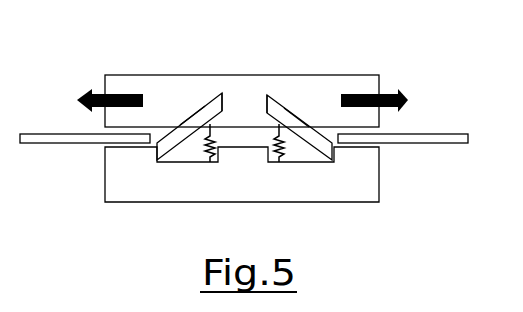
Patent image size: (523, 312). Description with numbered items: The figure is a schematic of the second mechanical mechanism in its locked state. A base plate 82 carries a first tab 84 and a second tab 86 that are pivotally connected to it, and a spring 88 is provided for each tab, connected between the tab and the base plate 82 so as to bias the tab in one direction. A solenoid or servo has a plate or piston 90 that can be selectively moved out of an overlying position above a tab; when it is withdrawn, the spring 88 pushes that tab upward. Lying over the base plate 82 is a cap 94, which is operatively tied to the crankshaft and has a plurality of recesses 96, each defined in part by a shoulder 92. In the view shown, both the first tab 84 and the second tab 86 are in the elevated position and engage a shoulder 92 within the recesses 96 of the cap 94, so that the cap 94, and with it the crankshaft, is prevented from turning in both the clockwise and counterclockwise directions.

The base plate 82 is at (370, 194).
The first tab 84 is at (160, 148).
The second tab 86 is at (326, 146).
The spring 88 is at (203, 162).
The plate or piston 90 is at (38, 137).
The shoulder 92 is at (202, 124).
The cap 94 is at (366, 84).
The recess 96 is at (221, 121).